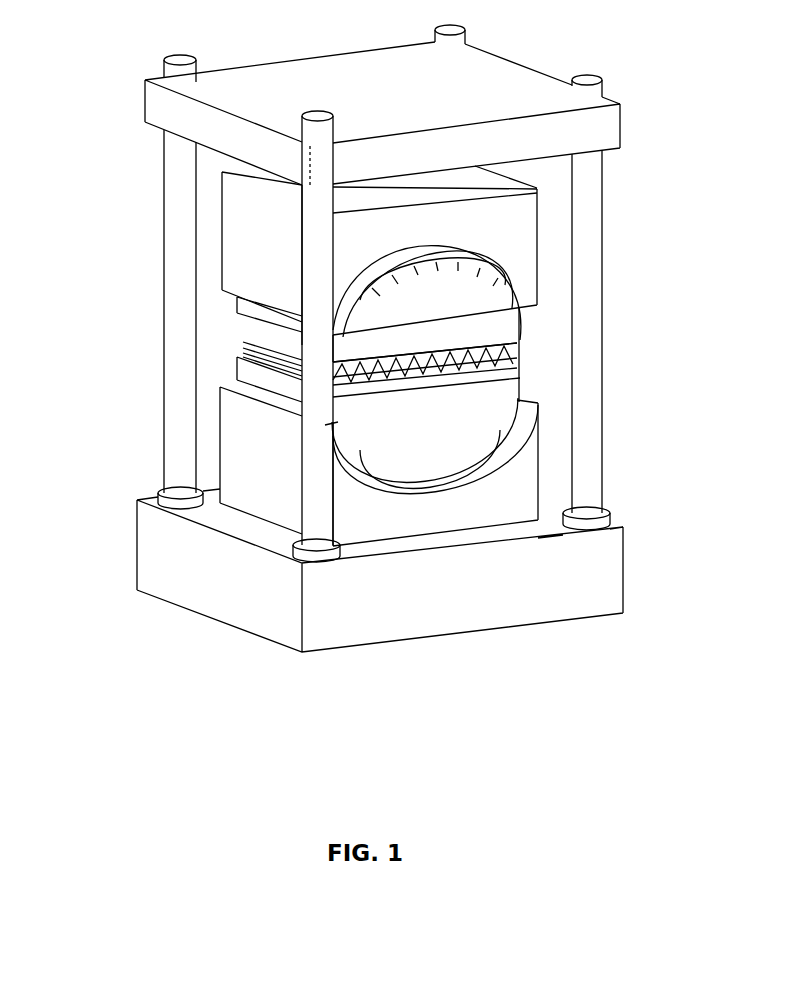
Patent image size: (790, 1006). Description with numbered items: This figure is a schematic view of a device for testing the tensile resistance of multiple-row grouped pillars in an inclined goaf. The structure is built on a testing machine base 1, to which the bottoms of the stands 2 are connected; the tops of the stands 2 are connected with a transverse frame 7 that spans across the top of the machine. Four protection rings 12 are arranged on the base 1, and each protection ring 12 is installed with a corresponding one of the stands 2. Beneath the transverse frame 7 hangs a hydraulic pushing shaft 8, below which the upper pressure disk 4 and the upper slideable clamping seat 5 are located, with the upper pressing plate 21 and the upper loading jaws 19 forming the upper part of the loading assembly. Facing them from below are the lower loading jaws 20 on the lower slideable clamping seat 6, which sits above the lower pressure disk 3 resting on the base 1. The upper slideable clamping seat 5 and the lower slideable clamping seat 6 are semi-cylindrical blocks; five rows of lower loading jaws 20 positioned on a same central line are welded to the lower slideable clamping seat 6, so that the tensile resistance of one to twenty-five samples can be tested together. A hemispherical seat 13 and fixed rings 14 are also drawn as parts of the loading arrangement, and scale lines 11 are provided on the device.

The testing machine base 1 is at (162, 553).
The stands 2 is at (177, 447).
The lower pressure disk 3 is at (517, 495).
The upper pressure disk 4 is at (335, 229).
The upper slideable clamping seat 5 is at (302, 320).
The lower slideable clamping seat 6 is at (493, 413).
The transverse frame 7 is at (145, 80).
The hydraulic pushing shaft 8 is at (360, 175).
The scale line 11 is at (372, 276).
The protection ring 12 is at (160, 497).
The hemispherical seat 13 is at (517, 345).
The fixed ring 14 is at (395, 328).
The upper loading jaw 19 is at (518, 365).
The lower loading jaw 20 is at (528, 392).
The upper pressing plate 21 is at (500, 318).